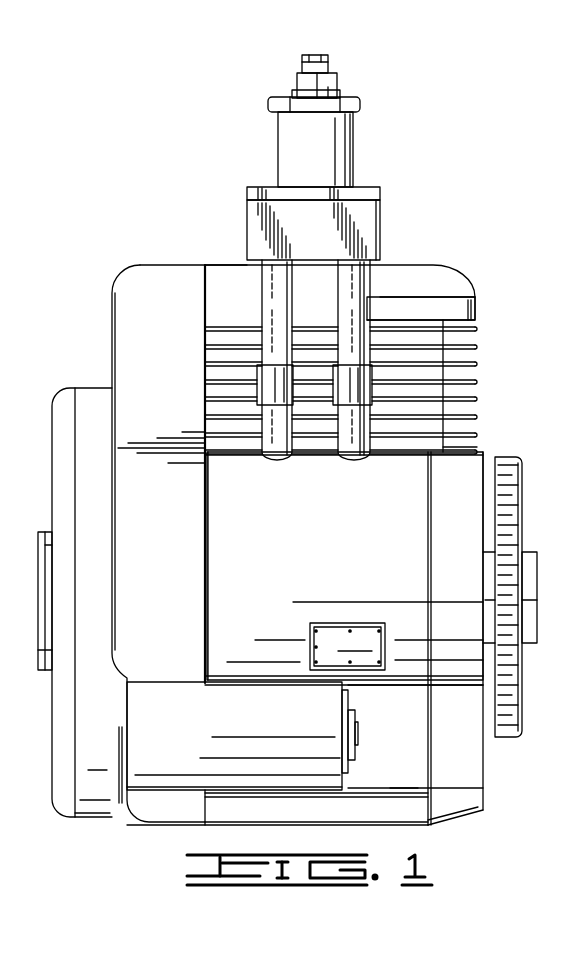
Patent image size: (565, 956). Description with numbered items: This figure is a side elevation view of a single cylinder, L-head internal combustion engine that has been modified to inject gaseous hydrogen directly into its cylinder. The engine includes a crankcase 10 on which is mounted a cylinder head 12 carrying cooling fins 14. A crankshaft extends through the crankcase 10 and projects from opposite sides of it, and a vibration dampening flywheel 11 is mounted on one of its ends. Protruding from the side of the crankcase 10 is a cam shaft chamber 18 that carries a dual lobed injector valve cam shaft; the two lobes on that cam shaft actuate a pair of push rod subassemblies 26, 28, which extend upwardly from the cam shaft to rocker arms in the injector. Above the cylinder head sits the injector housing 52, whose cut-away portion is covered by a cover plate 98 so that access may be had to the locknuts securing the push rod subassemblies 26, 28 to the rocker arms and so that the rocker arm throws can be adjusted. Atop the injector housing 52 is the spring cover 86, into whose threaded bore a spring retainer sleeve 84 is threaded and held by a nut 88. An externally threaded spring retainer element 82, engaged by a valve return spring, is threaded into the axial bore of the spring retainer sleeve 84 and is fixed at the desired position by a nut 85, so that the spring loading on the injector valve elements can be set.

The crankcase 10 is at (472, 533).
The vibration dampening flywheel 11 is at (508, 702).
The cylinder head 12 is at (473, 308).
The cooling fins 14 is at (433, 265).
The cam shaft chamber 18 is at (312, 538).
The push rod subassembly 26 is at (345, 460).
The push rod subassembly 28 is at (273, 460).
The injector housing 52 is at (257, 213).
The spring retainer element 82 is at (320, 65).
The spring retainer sleeve 84 is at (297, 92).
The nut 85 is at (320, 80).
The spring cover 86 is at (312, 157).
The nut 88 is at (300, 107).
The cover plate 98 is at (370, 187).